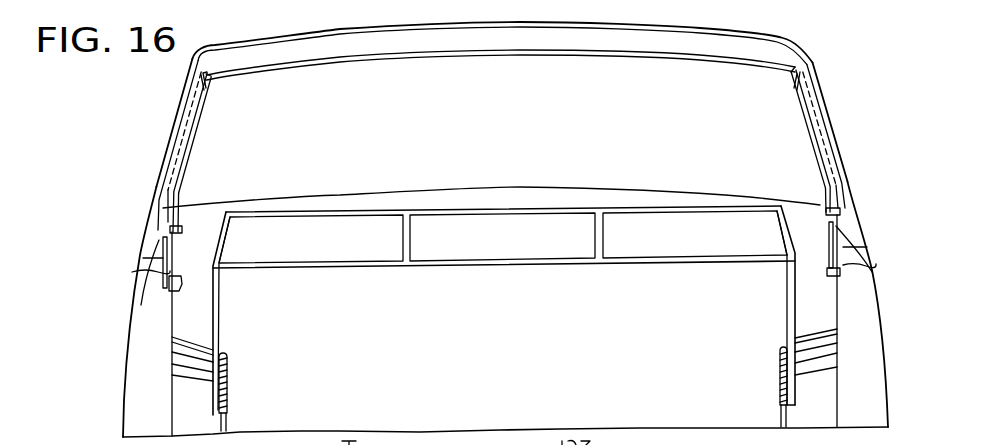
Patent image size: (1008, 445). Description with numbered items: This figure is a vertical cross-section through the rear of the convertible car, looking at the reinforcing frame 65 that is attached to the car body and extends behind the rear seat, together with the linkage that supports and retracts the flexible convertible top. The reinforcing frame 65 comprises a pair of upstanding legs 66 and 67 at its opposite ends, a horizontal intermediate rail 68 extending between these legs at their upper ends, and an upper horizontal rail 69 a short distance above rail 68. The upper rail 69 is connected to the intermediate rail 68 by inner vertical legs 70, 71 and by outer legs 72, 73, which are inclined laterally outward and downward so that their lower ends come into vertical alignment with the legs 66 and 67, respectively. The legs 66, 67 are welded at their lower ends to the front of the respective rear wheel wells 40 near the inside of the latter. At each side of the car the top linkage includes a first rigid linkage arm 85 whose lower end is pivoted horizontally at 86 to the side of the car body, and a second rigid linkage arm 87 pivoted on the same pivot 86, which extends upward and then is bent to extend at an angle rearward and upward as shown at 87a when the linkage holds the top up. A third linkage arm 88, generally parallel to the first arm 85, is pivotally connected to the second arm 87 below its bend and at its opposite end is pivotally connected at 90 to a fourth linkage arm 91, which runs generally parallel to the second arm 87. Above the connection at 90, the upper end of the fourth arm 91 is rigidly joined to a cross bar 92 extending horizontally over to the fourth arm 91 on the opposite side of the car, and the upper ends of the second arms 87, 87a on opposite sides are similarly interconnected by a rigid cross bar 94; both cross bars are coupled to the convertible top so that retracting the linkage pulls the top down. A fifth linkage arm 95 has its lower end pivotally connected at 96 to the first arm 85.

The rear wheel well 40 is at (220, 424).
The reinforcing frame 65 is at (504, 285).
The upstanding leg 66 is at (220, 322).
The upstanding leg 67 is at (787, 298).
The intermediate rail 68 is at (545, 267).
The upper rail 69 is at (482, 212).
The inner vertical leg 70 is at (410, 237).
The inner vertical leg 71 is at (603, 237).
The outer leg 72 is at (228, 240).
The outer leg 73 is at (781, 233).
The first linkage arm 85 is at (175, 255).
The pivot 86 is at (178, 287).
The second linkage arm 87 is at (156, 183).
The bent portion of second linkage arm 87a is at (182, 100).
The third linkage arm 88 is at (203, 115).
The pivotal connection 90 is at (213, 82).
The fourth linkage arm 91 is at (174, 141).
The cross bar 92 is at (418, 28).
The cross bar 94 is at (478, 58).
The fifth linkage arm 95 is at (197, 143).
The pivotal connection 96 is at (182, 230).